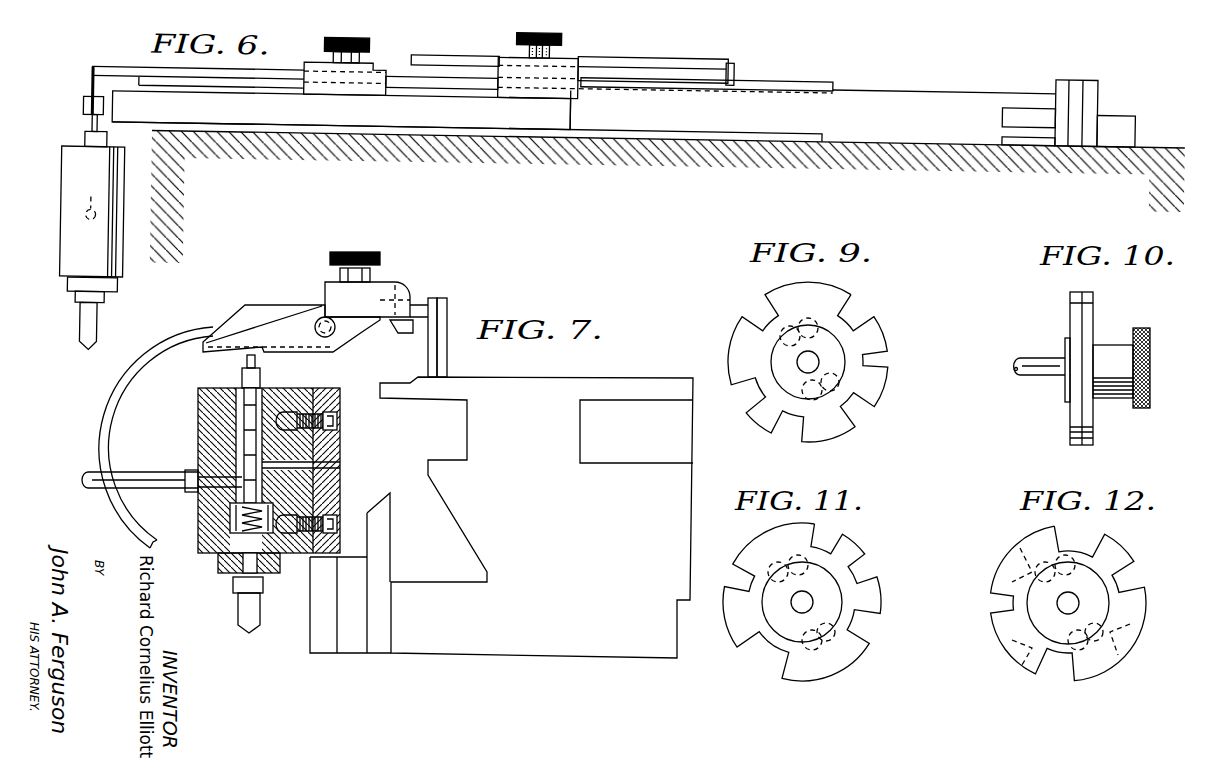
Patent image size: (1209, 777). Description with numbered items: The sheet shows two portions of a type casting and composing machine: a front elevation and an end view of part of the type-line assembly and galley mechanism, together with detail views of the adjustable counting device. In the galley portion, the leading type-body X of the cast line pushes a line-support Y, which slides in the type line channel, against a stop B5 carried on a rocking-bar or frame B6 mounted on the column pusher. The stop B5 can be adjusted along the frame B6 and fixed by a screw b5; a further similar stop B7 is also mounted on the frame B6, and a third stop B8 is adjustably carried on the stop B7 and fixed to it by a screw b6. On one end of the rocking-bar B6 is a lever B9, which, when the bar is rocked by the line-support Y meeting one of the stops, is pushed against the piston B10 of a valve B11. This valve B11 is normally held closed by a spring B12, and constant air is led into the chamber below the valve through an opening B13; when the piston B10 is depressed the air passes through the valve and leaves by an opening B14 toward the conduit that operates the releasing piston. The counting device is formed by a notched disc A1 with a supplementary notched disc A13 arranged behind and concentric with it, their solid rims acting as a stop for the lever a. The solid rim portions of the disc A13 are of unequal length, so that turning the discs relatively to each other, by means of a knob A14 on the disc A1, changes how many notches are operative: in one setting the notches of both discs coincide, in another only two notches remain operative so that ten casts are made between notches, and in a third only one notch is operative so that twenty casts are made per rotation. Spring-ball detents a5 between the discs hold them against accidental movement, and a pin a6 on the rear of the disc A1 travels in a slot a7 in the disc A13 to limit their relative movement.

In FIG. 6, the stop B5 is at (376, 72).
In FIG. 7, the stop B5 is at (400, 282).
In FIG. 6, the screw b5 is at (325, 41).
In FIG. 7, the screw b5 is at (383, 242).
In FIG. 6, the rocking-bar or frame B6 is at (437, 79).
In FIG. 7, the rocking-bar or frame B6 is at (326, 302).
In FIG. 6, the screw b6 is at (550, 43).
In FIG. 6, the stop B7 is at (580, 66).
In FIG. 6, the stop B8 is at (733, 71).
In FIG. 6, the lever B9 is at (83, 111).
In FIG. 7, the lever B9 is at (233, 334).
In FIG. 6, the piston B10 is at (92, 131).
In FIG. 7, the piston B10 is at (258, 362).
In FIG. 6, the valve B11 is at (120, 275).
In FIG. 7, the valve B11 is at (240, 402).
In FIG. 7, the spring B12 is at (235, 520).
In FIG. 6, the opening B13 is at (96, 347).
In FIG. 7, the opening B13 is at (232, 571).
In FIG. 6, the opening B14 is at (92, 211).
In FIG. 7, the opening B14 is at (212, 468).
In FIG. 6, the leading type-body X is at (1077, 72).
In FIG. 7, the leading type-body X is at (446, 357).
In FIG. 6, the line-support Y is at (891, 85).
In FIG. 7, the line-support Y is at (421, 304).
In FIG. 9, the lever a is at (805, 362).
In FIG. 10, the lever a is at (1033, 360).
In FIG. 11, the lever a is at (803, 604).
In FIG. 12, the lever a is at (1060, 598).
In FIG. 9, the disc A1 is at (870, 390).
In FIG. 10, the disc A1 is at (1087, 372).
In FIG. 11, the disc A1 is at (733, 613).
In FIG. 12, the disc A1 is at (1007, 633).
In FIG. 9, the supplementary notched disc A13 is at (873, 353).
In FIG. 10, the supplementary notched disc A13 is at (1075, 352).
In FIG. 11, the supplementary notched disc A13 is at (862, 570).
In FIG. 12, the supplementary notched disc A13 is at (1137, 602).
In FIG. 9, the knob A14 is at (790, 380).
In FIG. 10, the knob A14 is at (1142, 412).
In FIG. 11, the knob A14 is at (833, 603).
In FIG. 12, the knob A14 is at (1093, 590).
In FIG. 9, the detents a5 is at (765, 442).
In FIG. 10, the detents a5 is at (1093, 327).
In FIG. 11, the detents a5 is at (835, 540).
In FIG. 12, the detents a5 is at (1078, 560).
In FIG. 9, the pin a6 is at (788, 420).
In FIG. 10, the pin a6 is at (1068, 408).
In FIG. 11, the pin a6 is at (817, 637).
In FIG. 12, the pin a6 is at (1113, 627).
In FIG. 9, the slot a7 is at (820, 402).
In FIG. 10, the slot a7 is at (1070, 392).
In FIG. 11, the slot a7 is at (760, 647).
In FIG. 12, the slot a7 is at (1050, 658).